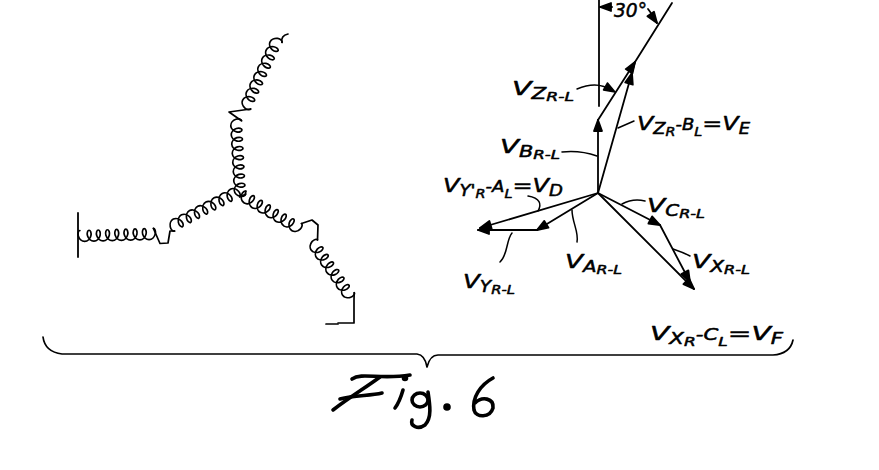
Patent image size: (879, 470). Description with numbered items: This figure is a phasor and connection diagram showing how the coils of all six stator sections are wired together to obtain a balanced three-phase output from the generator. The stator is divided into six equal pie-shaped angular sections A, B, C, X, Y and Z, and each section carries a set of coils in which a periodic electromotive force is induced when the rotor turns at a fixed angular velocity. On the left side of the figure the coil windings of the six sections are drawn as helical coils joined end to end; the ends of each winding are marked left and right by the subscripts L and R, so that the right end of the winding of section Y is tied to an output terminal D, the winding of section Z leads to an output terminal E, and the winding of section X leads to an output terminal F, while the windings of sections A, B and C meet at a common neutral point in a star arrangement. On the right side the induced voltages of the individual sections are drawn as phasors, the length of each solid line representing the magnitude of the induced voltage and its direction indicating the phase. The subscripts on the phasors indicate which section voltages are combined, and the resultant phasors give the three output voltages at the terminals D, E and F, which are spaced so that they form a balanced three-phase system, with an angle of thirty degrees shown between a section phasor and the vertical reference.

The three-phase output terminal D is at (79, 222).
The three-phase output terminal E is at (309, 32).
The three-phase output terminal F is at (324, 324).
The stator section A is at (206, 225).
The stator section B is at (222, 153).
The stator section C is at (284, 205).
The stator section X is at (349, 274).
The stator section Y is at (116, 260).
The stator section Z is at (243, 68).